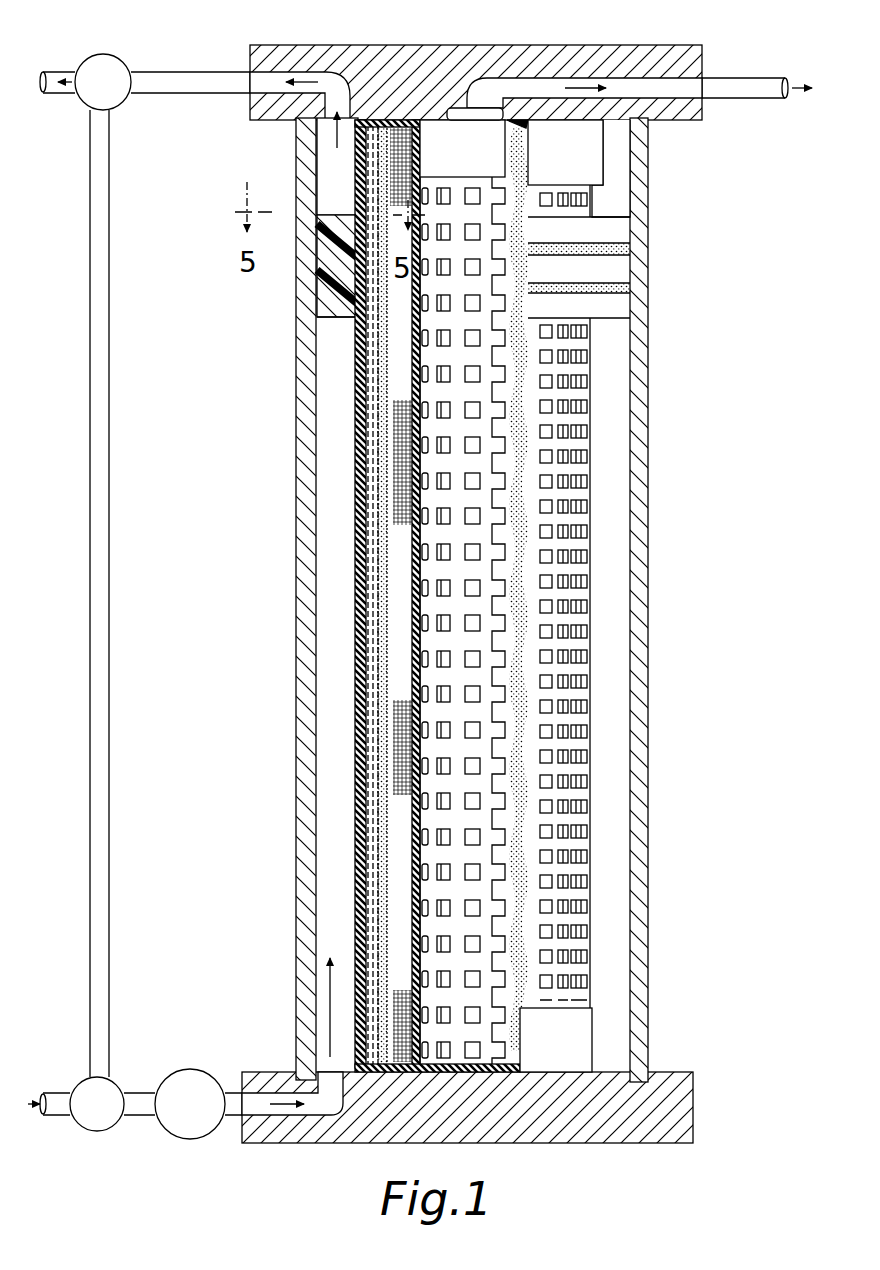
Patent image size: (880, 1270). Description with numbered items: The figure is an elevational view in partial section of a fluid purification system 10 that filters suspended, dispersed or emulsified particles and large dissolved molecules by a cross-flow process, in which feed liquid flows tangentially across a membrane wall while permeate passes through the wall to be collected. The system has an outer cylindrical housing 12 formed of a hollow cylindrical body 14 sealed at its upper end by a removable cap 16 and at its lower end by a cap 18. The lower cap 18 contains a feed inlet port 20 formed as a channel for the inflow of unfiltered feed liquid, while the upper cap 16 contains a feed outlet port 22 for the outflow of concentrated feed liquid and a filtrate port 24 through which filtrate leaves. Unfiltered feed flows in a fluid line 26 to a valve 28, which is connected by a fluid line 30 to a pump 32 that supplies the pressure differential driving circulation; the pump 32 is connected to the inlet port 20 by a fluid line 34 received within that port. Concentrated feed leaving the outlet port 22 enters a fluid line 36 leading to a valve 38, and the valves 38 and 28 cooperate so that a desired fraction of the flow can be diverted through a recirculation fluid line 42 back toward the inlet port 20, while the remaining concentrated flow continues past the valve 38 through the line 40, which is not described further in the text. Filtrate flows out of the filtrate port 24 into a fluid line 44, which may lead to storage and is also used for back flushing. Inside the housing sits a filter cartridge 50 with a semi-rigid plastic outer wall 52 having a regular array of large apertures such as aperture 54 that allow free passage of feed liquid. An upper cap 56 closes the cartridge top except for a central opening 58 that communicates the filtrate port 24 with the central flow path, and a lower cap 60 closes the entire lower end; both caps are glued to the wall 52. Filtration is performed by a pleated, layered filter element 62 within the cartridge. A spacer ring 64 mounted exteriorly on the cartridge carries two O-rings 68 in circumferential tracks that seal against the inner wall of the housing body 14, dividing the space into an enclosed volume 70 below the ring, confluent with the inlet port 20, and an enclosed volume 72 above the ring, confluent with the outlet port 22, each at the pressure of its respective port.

The fluid purification system 10 is at (379, 18).
The outer cylindrical housing 12 is at (660, 320).
The hollow cylindrical body 14 is at (646, 403).
The removable cap 16 is at (627, 63).
The lower cap 18 is at (668, 1082).
The feed inlet port 20 is at (293, 1109).
The feed outlet port 22 is at (320, 73).
The filtrate port 24 is at (512, 85).
The fluid line 26 is at (60, 1112).
The valve 28 is at (82, 1087).
The fluid line 30 is at (145, 1108).
The pump 32 is at (197, 1078).
The fluid line 34 is at (240, 1108).
The fluid line 36 is at (213, 88).
The valve 38 is at (115, 98).
The concentrate outlet conduit 40 is at (63, 96).
The fluid line 42 is at (93, 350).
The fluid line 44 is at (764, 96).
The filter cartridge 50 is at (615, 686).
The outer wall 52 is at (578, 548).
The aperture 54 is at (587, 428).
The upper cap 56 is at (593, 163).
The central opening 58 is at (447, 175).
The lower cap 60 is at (578, 1035).
The filter element 62 is at (354, 518).
The spacer ring 64 is at (346, 314).
The O-rings 68 is at (320, 288).
The enclosed volume 70 is at (328, 622).
The enclosed volume 72 is at (332, 173).